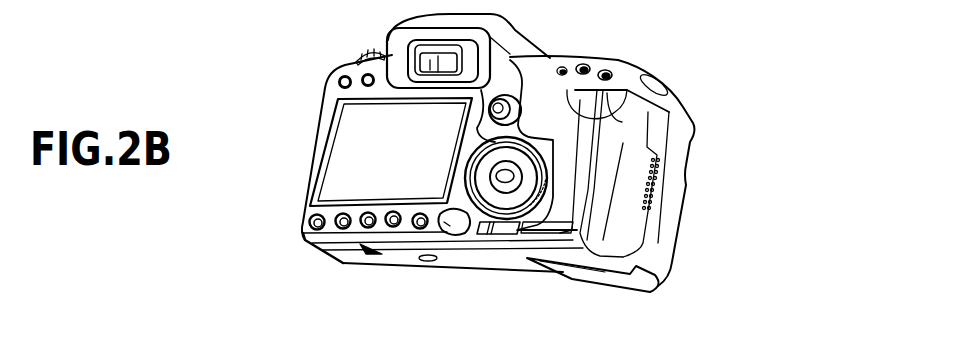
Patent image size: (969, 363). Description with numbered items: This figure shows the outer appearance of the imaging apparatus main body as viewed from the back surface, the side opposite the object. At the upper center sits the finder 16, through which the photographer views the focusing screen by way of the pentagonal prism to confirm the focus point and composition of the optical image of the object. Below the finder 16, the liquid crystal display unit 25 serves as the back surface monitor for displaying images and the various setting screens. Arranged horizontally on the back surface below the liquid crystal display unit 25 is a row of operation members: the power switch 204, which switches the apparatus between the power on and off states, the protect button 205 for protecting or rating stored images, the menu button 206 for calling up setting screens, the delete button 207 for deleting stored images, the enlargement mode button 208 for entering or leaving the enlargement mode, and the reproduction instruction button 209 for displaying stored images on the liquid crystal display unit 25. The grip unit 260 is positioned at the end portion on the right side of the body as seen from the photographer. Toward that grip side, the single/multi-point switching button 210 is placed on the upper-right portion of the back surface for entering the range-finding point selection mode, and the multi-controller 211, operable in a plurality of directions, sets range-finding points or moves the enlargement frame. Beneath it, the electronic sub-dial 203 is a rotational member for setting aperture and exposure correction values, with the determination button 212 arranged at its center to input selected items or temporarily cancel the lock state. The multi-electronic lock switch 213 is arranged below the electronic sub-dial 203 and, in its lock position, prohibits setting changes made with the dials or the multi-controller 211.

The finder 16 is at (427, 53).
The liquid crystal display unit 25 is at (333, 153).
The electronic sub-dial 203 is at (550, 273).
The power switch 204 is at (462, 234).
The protect button 205 is at (420, 230).
The menu button 206 is at (394, 229).
The delete button 207 is at (367, 230).
The enlargement mode button 208 is at (341, 231).
The reproduction instruction button 209 is at (305, 237).
The single/multi-point switching button 210 is at (610, 66).
The multi-controller 211 is at (514, 96).
The determination button 212 is at (506, 177).
The multi-electronic lock switch 213 is at (505, 236).
The grip unit 260 is at (679, 188).